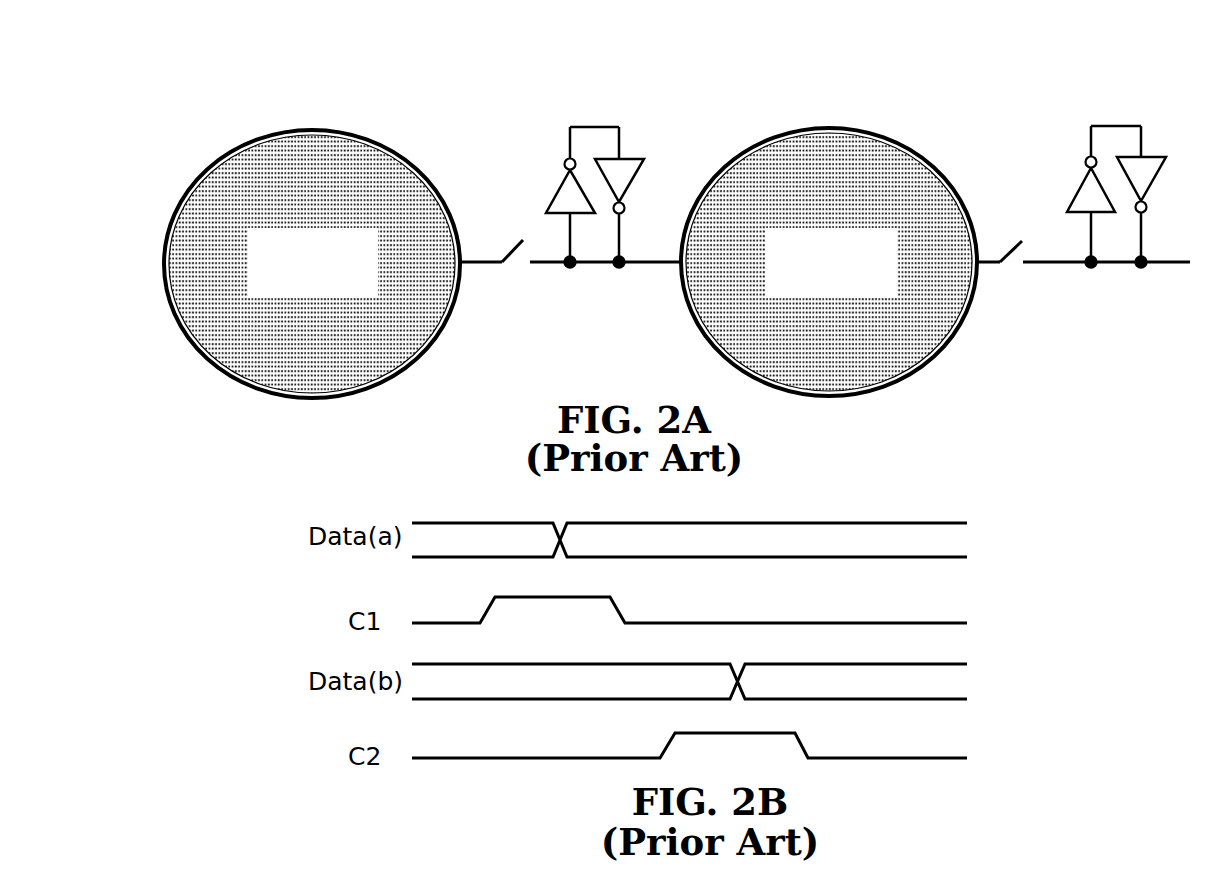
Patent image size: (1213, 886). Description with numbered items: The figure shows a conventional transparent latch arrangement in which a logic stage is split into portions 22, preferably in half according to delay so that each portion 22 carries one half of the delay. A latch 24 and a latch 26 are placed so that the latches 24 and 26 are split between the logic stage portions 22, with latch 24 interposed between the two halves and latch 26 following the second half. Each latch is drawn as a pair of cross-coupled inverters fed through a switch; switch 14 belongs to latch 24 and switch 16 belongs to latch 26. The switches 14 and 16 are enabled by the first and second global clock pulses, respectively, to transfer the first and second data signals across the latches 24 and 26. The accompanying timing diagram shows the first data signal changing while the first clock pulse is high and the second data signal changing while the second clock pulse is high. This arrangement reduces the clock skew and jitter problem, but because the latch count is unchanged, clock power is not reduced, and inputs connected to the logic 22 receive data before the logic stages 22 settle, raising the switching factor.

The logic stage portion 22 is at (396, 150).
The switch 14 is at (507, 220).
The switch 16 is at (1020, 220).
The latch 24 is at (613, 106).
The latch 26 is at (1104, 109).